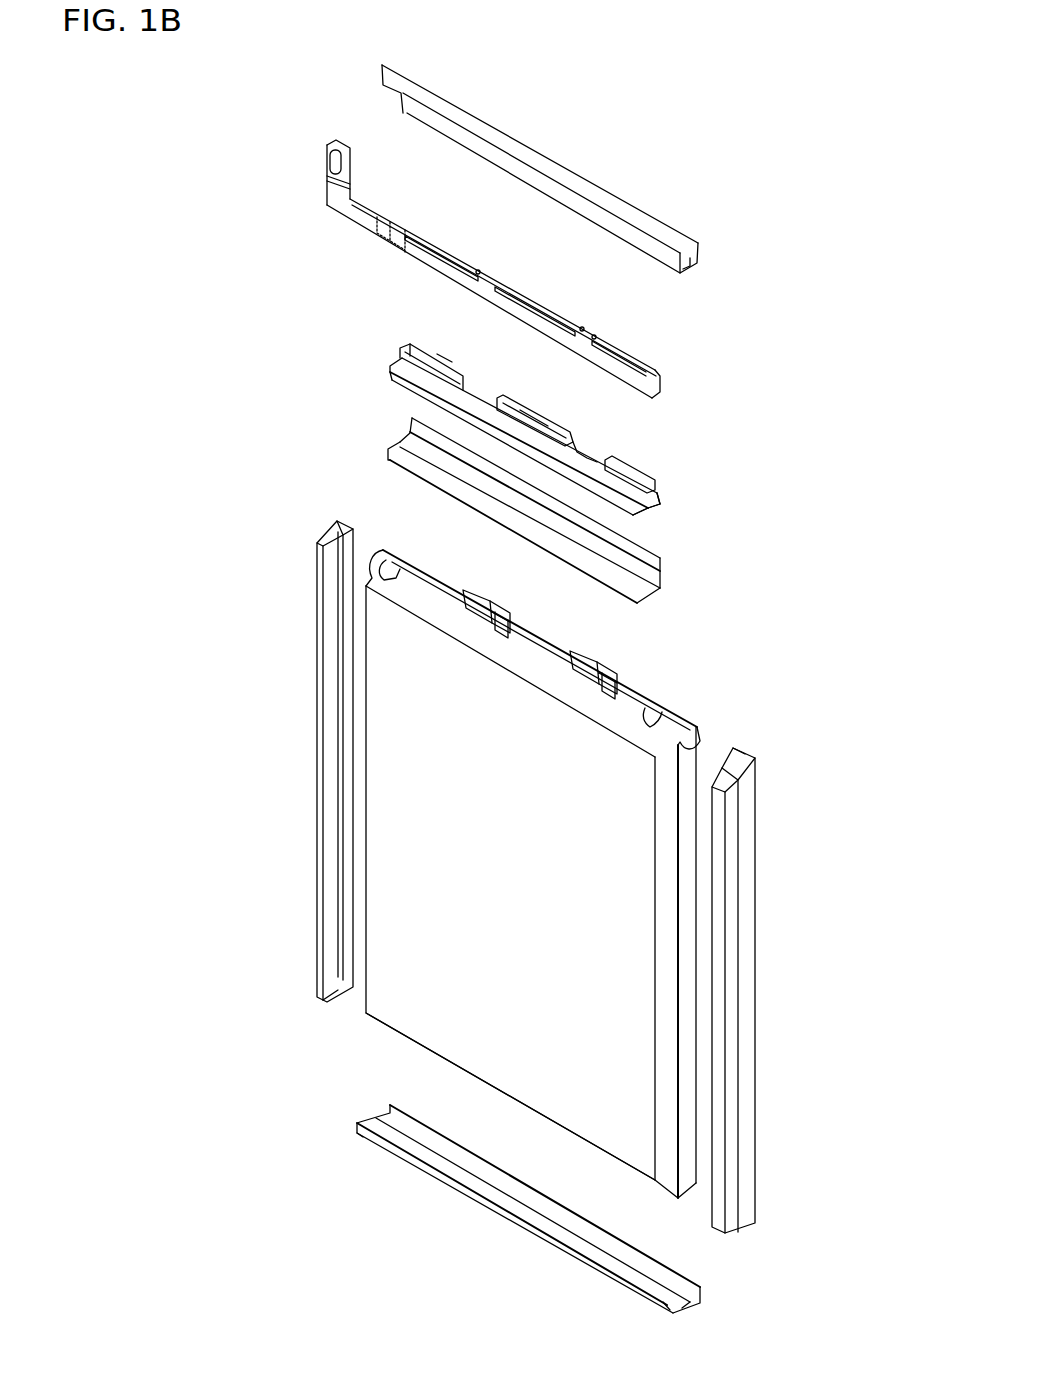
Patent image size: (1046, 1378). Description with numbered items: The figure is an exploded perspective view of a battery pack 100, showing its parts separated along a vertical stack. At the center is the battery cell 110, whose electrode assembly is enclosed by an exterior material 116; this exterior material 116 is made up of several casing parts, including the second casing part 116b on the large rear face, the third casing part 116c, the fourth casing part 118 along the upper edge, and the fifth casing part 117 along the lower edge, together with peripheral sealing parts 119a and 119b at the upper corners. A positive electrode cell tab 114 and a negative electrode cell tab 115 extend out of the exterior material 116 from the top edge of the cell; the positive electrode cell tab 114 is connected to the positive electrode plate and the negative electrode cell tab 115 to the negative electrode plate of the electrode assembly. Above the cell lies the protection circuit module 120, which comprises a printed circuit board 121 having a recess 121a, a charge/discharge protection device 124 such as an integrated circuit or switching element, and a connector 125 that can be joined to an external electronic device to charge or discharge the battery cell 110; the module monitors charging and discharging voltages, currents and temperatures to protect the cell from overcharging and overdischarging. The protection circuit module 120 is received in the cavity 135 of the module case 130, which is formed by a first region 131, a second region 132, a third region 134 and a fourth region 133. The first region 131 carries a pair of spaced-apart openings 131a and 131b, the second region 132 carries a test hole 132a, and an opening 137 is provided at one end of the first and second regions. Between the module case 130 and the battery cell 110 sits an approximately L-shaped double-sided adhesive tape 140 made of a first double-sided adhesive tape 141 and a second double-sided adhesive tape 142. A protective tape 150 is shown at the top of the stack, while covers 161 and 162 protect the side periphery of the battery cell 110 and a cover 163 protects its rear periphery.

The battery pack 100 is at (810, 137).
The battery cell 110 is at (538, 850).
The positive electrode cell tab 114 is at (488, 593).
The negative electrode cell tab 115 is at (594, 656).
The exterior material 116 is at (680, 880).
The second casing part 116b is at (610, 938).
The third casing part 116c is at (649, 722).
The fifth casing part 117 is at (508, 1107).
The fourth casing part 118 is at (637, 690).
The peripheral sealing part 119a is at (376, 560).
The peripheral sealing part 119b is at (699, 742).
The protection circuit module 120 is at (521, 269).
The printed circuit board 121 is at (650, 364).
The recess 121a is at (478, 266).
The charge/discharge protection device 124 is at (512, 278).
The connector 125 is at (362, 208).
The module case 130 is at (539, 440).
The first region 131 is at (648, 487).
The opening 131a is at (487, 392).
The opening 131b is at (605, 462).
The second region 132 is at (664, 494).
The test hole 132a is at (437, 350).
The fourth region 133 is at (648, 514).
The third region 134 is at (648, 518).
The cavity 135 is at (541, 410).
The opening 137 is at (400, 345).
The double-sided adhesive tape 140 is at (455, 507).
The first double-sided adhesive tape 141 is at (405, 428).
The second double-sided adhesive tape 142 is at (393, 474).
The protective tape 150 is at (563, 170).
The cover 161 is at (320, 756).
The cover 162 is at (750, 1063).
The cover 163 is at (510, 1221).